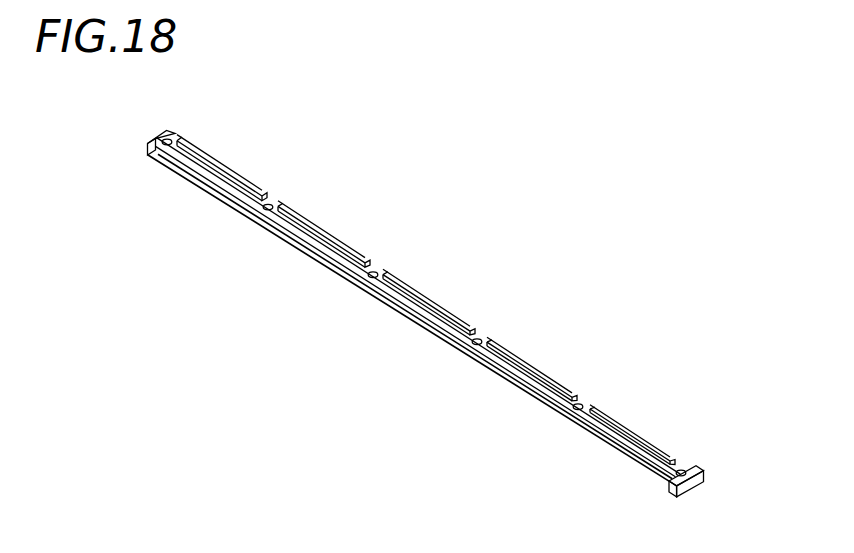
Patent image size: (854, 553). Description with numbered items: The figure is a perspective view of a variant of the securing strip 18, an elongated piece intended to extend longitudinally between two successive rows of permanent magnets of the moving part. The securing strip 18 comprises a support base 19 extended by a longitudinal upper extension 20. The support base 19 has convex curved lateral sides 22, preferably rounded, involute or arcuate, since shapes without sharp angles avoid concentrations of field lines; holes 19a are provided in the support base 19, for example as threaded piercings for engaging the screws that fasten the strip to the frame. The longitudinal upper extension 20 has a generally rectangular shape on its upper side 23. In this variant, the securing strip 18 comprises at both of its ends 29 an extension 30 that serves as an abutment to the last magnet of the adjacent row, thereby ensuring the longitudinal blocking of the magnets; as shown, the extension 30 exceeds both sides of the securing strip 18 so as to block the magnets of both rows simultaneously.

The securing strip 18 is at (432, 286).
The support base 19 is at (306, 250).
The holes 19a is at (276, 204).
The longitudinal upper extension 20 is at (220, 180).
The lateral sides 22 is at (408, 315).
The upper side 23 is at (343, 240).
The ends 29 is at (186, 128).
The extension 30 is at (158, 138).